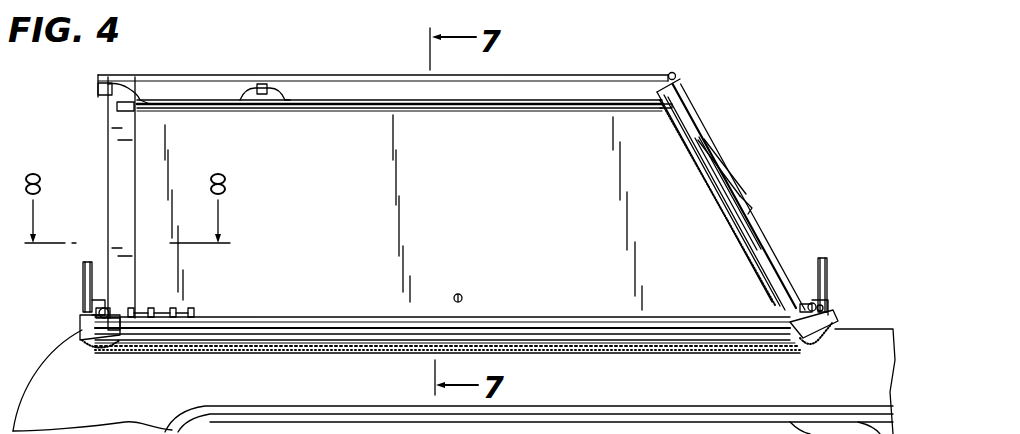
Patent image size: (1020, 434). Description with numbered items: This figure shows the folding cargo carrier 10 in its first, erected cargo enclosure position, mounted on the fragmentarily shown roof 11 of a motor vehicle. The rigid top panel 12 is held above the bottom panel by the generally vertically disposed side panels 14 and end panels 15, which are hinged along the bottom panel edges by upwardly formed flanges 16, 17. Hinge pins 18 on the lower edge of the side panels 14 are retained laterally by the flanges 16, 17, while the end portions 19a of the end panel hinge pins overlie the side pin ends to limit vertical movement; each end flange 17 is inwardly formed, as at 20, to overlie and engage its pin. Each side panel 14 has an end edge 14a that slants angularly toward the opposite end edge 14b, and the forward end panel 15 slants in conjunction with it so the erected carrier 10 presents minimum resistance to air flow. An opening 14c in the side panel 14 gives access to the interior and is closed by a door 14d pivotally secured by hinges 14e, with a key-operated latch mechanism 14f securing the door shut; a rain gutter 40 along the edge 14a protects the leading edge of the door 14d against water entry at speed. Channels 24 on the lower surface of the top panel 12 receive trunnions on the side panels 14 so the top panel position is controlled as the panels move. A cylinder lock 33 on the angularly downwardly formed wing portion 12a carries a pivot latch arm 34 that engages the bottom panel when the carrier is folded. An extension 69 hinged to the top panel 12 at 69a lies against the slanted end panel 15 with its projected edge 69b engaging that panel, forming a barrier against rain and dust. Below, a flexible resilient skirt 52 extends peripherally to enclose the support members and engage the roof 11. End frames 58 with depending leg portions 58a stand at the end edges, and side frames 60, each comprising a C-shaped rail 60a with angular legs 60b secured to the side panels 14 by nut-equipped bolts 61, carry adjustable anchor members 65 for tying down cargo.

The folding cargo carrier 10 is at (760, 126).
The roof 11 is at (878, 338).
The top panel 12 is at (585, 72).
The angularly downwardly formed wing portion 12a is at (445, 96).
The side panel 14 is at (458, 201).
The end edge 14a is at (762, 237).
The opposite end edge 14b is at (108, 217).
The opening 14c is at (125, 112).
The door 14d is at (318, 123).
The hinge 14e is at (682, 106).
The latch mechanism 14f is at (463, 296).
The end panel 15 is at (104, 173).
The upwardly formed flange 16 is at (115, 333).
The upwardly formed flange 17 is at (93, 307).
The hinge pin 18 is at (110, 333).
The end portion of hinge pin 19a is at (112, 311).
The inwardly formed portion of end flange 20 is at (106, 306).
The channel 24 is at (98, 90).
The cylinder lock 33 is at (285, 104).
The pivot latch arm 34 is at (255, 104).
The rain gutter 40 is at (738, 240).
The flexible resilient skirt 52 is at (605, 349).
The end frame 58 is at (83, 266).
The depending leg portion 58a is at (886, 265).
The side frame 60 is at (340, 332).
The C-shaped rail 60a is at (365, 351).
The angular leg 60b is at (828, 382).
The nut-equipped bolt 61 is at (82, 318).
The anchor member 65 is at (182, 311).
The extension 69 is at (720, 152).
The hinge connection of extension 69a is at (676, 77).
The projected edge 69b is at (751, 211).